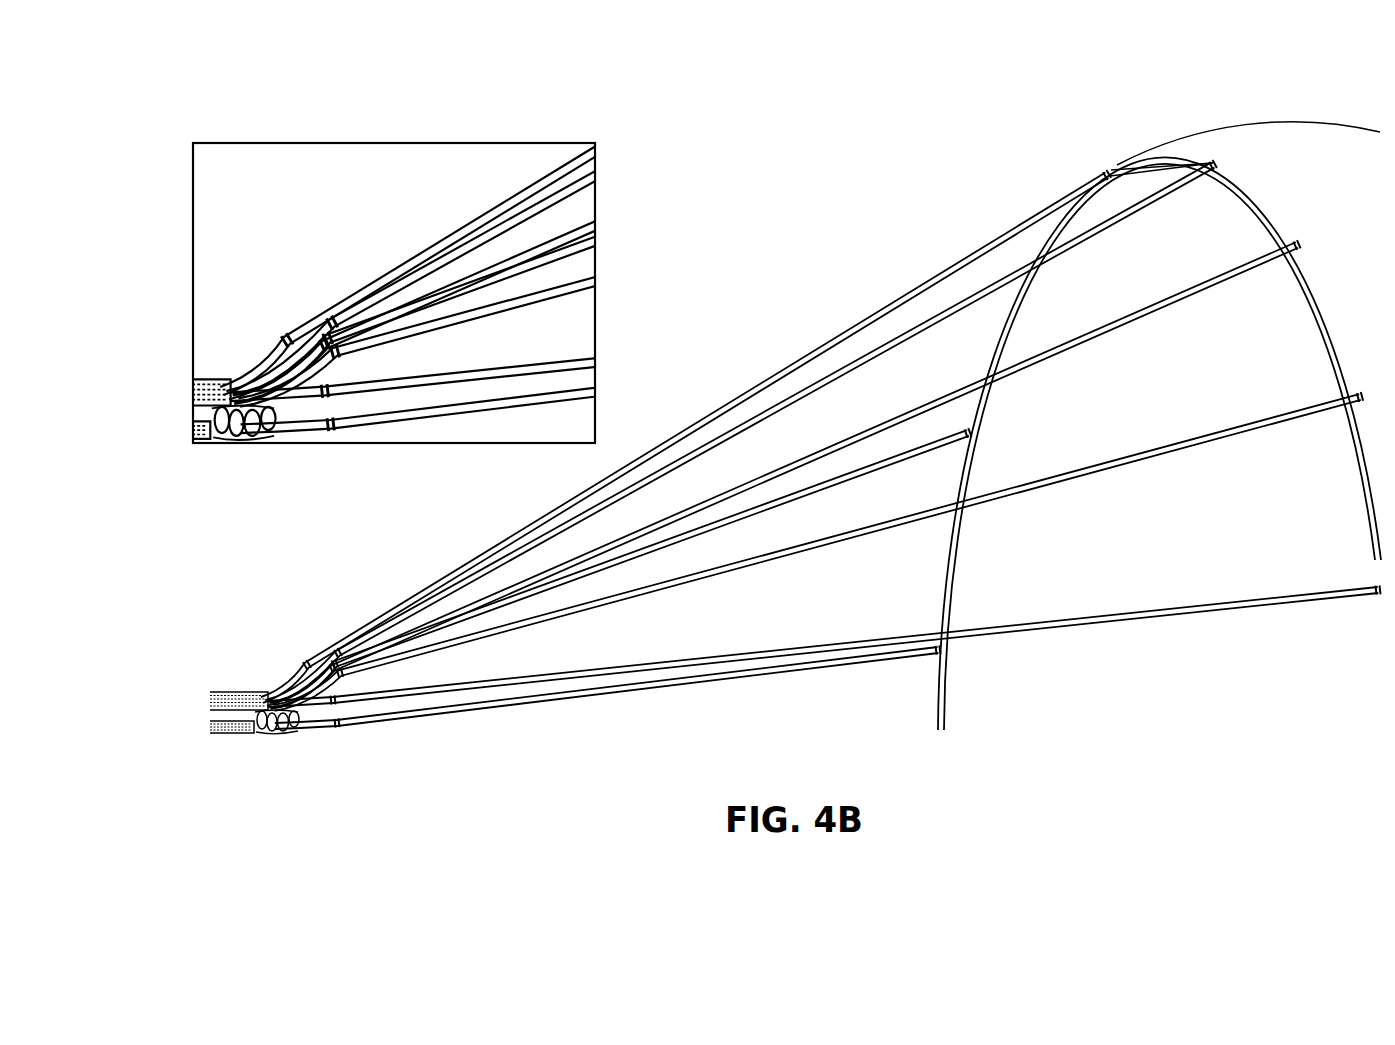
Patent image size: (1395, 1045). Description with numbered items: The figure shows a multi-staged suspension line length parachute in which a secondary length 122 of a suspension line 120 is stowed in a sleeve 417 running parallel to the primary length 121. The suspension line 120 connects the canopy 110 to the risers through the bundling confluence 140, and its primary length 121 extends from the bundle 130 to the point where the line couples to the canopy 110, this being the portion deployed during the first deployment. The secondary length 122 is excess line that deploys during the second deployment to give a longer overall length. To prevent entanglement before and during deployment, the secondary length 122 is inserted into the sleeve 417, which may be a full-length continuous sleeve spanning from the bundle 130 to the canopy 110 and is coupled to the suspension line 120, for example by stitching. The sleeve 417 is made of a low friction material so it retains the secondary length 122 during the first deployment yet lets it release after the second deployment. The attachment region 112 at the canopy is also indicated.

The canopy 110 is at (1257, 147).
The attachment point 112 is at (1300, 238).
The suspension line 120 is at (798, 394).
The primary length 121 is at (298, 665).
The secondary length 122 is at (1200, 168).
The bundle 130 is at (266, 696).
The bundling confluence 140 is at (253, 718).
The sleeve 417 is at (362, 621).